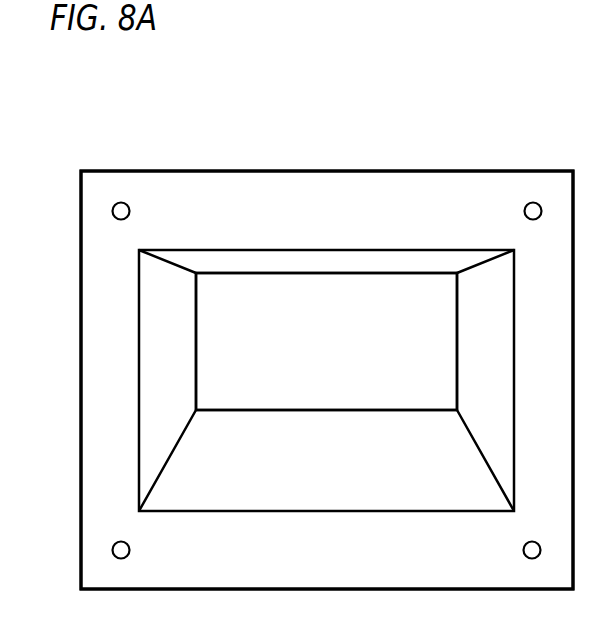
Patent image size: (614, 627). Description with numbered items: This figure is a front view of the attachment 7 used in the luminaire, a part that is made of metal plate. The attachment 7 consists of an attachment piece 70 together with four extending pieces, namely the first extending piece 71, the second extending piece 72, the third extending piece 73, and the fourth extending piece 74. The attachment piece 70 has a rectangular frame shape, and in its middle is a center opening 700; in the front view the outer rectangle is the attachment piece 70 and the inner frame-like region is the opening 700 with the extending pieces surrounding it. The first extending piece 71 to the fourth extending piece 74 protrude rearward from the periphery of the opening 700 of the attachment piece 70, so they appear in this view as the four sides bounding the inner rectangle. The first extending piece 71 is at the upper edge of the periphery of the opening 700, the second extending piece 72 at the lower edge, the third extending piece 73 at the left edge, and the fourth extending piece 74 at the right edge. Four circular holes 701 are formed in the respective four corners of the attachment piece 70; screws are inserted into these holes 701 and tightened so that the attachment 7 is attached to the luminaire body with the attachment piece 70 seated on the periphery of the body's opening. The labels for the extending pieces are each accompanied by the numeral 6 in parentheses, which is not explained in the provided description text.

The attachment 7 is at (406, 157).
The attachment piece 70 is at (295, 185).
The opening 700 is at (432, 258).
The circular holes 701 is at (123, 205).
The first extending piece 71 is at (313, 265).
The second extending piece 72 is at (307, 418).
The third extending piece 73 is at (185, 359).
The fourth extending piece 74 is at (467, 355).
The wall surface 6 is at (326, 341).